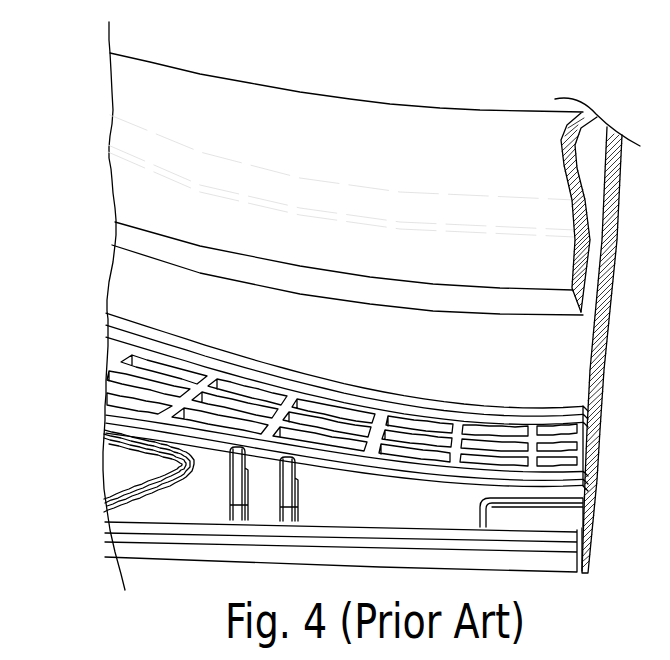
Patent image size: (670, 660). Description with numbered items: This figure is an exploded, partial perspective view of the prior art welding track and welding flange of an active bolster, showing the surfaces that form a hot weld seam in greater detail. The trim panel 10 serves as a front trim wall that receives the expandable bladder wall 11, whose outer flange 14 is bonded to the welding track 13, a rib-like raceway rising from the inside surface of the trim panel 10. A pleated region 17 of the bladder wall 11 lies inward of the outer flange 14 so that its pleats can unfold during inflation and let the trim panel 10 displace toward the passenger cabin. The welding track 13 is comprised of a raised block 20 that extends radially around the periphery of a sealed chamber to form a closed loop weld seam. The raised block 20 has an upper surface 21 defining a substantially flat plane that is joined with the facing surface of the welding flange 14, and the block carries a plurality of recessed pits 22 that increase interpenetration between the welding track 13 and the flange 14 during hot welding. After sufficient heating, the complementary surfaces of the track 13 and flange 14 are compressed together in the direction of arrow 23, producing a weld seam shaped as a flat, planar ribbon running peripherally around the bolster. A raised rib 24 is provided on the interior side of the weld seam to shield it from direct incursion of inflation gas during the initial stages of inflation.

The trim panel 10 is at (186, 569).
The bladder wall 11 is at (98, 181).
The welding track 13 is at (257, 375).
The outer flange 14 is at (317, 237).
The pleated region 17 is at (508, 124).
The raised block 20 is at (366, 480).
The upper surface 21 is at (459, 455).
The recessed pits 22 is at (490, 423).
The arrow 23 is at (390, 378).
The raised rib 24 is at (558, 408).